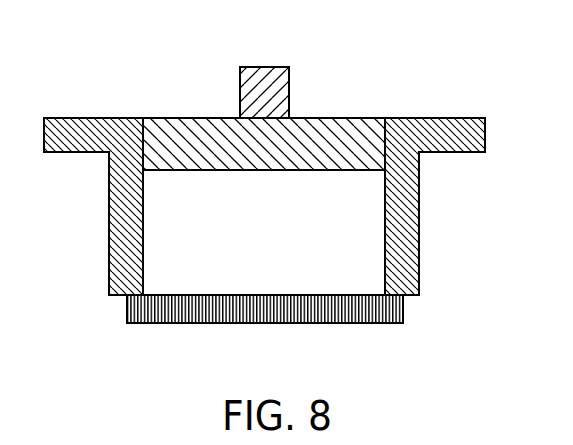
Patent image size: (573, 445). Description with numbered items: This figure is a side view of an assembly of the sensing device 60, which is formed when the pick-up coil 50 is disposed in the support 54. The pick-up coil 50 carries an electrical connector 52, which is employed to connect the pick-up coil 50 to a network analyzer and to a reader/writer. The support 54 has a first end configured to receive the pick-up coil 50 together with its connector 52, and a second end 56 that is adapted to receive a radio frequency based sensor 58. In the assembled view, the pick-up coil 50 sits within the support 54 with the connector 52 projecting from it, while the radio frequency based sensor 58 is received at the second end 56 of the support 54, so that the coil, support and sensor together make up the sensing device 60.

The pick-up coil 50 is at (220, 121).
The electrical connector 52 is at (283, 74).
The support 54 is at (121, 213).
The second end 56 is at (412, 296).
The radio frequency based sensor 58 is at (352, 316).
The sensing device 60 is at (273, 217).